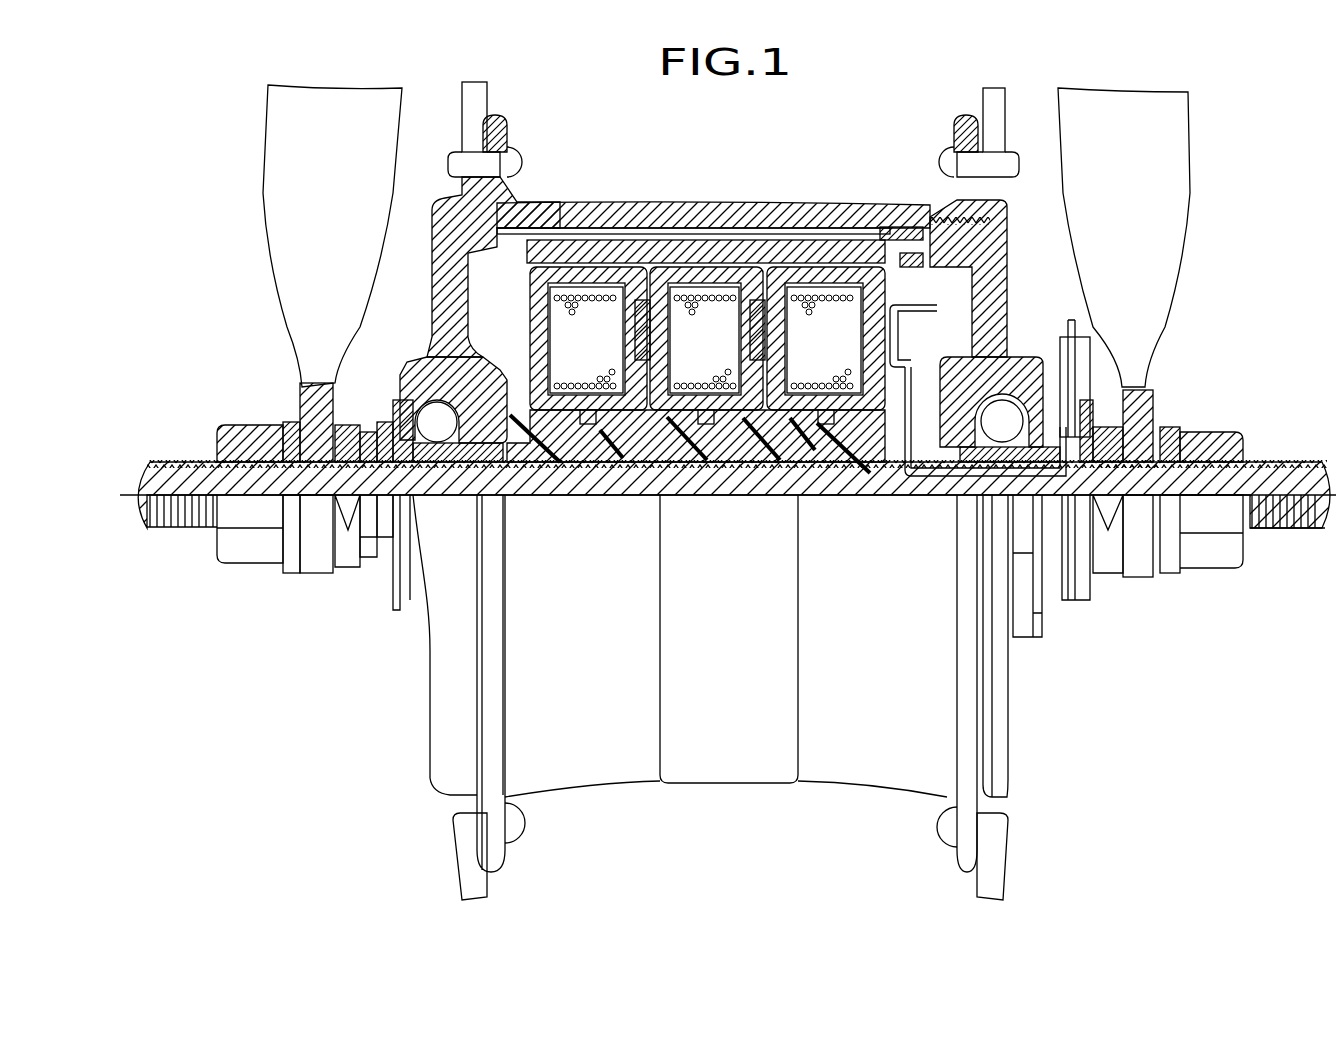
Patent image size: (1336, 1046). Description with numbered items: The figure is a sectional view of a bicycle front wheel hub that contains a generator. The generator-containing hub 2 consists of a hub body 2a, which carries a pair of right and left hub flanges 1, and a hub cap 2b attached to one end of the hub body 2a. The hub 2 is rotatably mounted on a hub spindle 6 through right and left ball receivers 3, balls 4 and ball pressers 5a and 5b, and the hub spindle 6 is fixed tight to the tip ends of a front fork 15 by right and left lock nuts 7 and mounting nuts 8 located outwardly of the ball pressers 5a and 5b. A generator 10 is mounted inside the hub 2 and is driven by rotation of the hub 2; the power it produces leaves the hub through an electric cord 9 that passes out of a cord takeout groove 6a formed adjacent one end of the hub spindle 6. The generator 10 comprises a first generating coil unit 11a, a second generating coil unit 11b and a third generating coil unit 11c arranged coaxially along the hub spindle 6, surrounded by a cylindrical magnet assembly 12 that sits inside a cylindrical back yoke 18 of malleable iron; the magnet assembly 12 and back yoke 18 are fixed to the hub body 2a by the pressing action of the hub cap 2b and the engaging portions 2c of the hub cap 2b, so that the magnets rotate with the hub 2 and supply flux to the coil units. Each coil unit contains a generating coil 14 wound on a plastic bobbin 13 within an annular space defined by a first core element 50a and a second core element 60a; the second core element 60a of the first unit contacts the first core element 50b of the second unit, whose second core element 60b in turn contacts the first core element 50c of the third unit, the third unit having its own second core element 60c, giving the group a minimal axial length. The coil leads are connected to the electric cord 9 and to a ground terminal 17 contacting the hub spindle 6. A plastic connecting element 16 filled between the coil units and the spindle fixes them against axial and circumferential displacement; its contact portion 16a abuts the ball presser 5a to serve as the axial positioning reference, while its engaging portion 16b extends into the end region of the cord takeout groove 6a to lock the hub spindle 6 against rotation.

The hub flange 1 is at (497, 130).
The bicycle generator-containing hub 2 is at (718, 795).
The hub body 2a is at (785, 210).
The hub cap 2b is at (925, 307).
The engaging portion 2c is at (909, 234).
The ball receiver 3 is at (445, 362).
The ball 4 is at (427, 422).
The ball presser 5a is at (395, 520).
The ball presser 5b is at (1027, 450).
The hub spindle 6 is at (175, 470).
The cord takeout groove 6a is at (1118, 473).
The lock nut 7 is at (347, 558).
The mounting nut 8 is at (233, 550).
The electric cord 9 is at (948, 473).
The generator 10 is at (478, 282).
The first generating coil unit 11a is at (602, 250).
The second generating coil unit 11b is at (712, 262).
The third generating coil unit 11c is at (832, 259).
The cylindrical magnet assembly 12 is at (650, 252).
The plastic bobbin 13 is at (552, 347).
The generating coil 14 is at (612, 383).
The front fork 15 is at (273, 208).
The plastic connecting element 16 is at (598, 450).
The contact portion 16a is at (478, 575).
The engaging portion 16b is at (890, 470).
The ground terminal 17 is at (993, 267).
The back yoke 18 is at (552, 233).
The first ring-shaped core element 50a is at (568, 410).
The first core element 50b is at (692, 413).
The first core element 50c is at (802, 410).
The second ring-shaped core element 60a is at (600, 395).
The second core element 60b is at (730, 412).
The second core element 60c is at (847, 443).